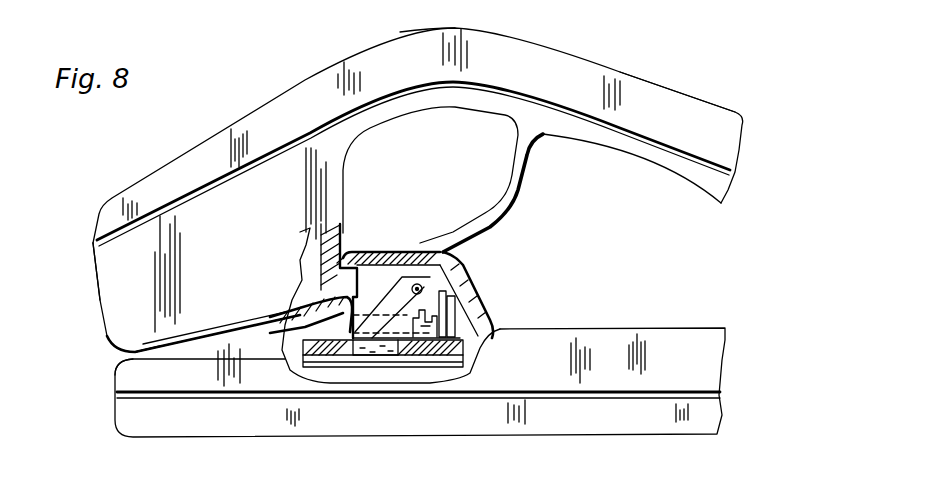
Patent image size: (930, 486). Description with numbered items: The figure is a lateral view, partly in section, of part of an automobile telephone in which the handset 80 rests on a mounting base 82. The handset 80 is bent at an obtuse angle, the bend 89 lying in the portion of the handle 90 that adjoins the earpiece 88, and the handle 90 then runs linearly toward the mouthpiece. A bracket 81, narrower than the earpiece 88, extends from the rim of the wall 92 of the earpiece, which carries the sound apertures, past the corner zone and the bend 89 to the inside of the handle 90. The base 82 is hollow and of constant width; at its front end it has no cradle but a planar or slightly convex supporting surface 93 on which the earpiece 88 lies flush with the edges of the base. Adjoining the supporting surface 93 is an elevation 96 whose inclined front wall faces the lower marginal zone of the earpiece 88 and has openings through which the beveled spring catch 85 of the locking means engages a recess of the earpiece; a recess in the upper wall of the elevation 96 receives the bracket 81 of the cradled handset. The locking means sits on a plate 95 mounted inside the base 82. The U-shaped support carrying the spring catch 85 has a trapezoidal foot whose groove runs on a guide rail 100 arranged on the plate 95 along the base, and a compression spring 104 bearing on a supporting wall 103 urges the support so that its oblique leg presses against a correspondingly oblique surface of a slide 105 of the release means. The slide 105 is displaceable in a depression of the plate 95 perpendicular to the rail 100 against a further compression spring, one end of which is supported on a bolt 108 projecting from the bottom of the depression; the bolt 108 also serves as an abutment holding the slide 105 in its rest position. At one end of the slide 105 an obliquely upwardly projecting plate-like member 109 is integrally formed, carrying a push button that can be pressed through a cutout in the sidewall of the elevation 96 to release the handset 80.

The handset 80 is at (276, 78).
The bracket 81 is at (523, 165).
The mounting base 82 is at (600, 352).
The spring catch 85 is at (357, 282).
The earpiece 88 is at (130, 270).
The bend 89 is at (465, 47).
The handle 90 is at (697, 124).
The wall of the earpiece 92 is at (145, 343).
The supporting surface 93 is at (116, 357).
The plate 95 is at (441, 364).
The elevation 96 is at (410, 243).
The guide rail 100 is at (343, 342).
The supporting wall 103 is at (455, 321).
The compression spring 104 is at (447, 305).
The slide 105 is at (370, 342).
The bolt 108 is at (381, 345).
The member of plate configuration 109 is at (405, 307).